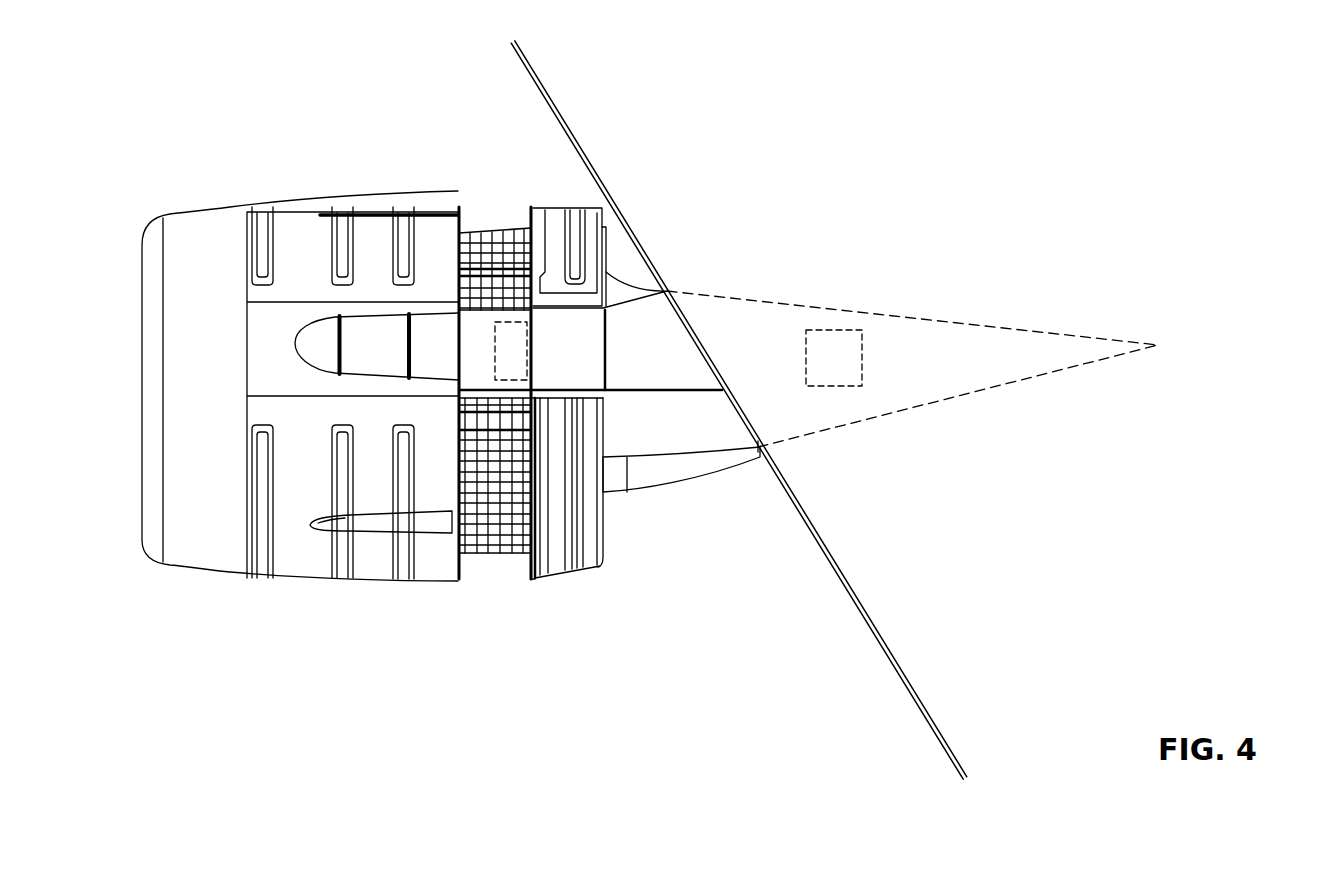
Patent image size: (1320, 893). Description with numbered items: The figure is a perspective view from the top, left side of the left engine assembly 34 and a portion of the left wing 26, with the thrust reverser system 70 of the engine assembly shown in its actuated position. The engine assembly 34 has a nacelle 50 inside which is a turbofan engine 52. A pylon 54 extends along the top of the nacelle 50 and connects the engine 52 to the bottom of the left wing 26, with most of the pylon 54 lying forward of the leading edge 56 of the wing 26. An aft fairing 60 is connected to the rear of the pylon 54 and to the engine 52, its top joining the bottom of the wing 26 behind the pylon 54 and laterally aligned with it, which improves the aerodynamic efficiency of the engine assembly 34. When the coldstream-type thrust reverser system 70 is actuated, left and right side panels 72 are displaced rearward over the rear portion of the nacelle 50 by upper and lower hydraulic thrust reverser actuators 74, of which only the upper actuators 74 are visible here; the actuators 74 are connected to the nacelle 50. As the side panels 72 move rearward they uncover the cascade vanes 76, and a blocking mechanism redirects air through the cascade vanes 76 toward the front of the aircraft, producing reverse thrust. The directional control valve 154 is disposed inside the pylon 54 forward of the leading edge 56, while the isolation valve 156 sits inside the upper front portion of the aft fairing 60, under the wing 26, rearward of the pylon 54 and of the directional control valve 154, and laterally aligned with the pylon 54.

The left wing 26 is at (673, 165).
The left engine assembly 34 is at (635, 604).
The nacelle 50 is at (292, 552).
The engine 52 is at (710, 470).
The pylon 54 is at (363, 340).
The leading edge 56 is at (840, 578).
The aft fairing 60 is at (912, 415).
The thrust reverser system 70 is at (545, 627).
The side panel 72 is at (542, 232).
The hydraulic thrust reverser actuator 74 is at (513, 263).
The cascade vanes 76 is at (508, 340).
The directional control valve 154 is at (465, 288).
The isolation valve 156 is at (838, 340).